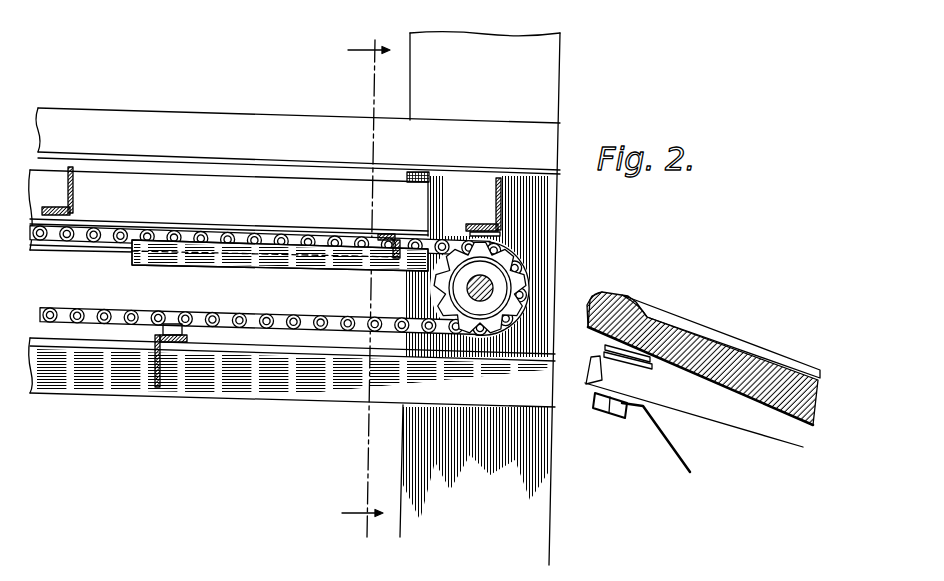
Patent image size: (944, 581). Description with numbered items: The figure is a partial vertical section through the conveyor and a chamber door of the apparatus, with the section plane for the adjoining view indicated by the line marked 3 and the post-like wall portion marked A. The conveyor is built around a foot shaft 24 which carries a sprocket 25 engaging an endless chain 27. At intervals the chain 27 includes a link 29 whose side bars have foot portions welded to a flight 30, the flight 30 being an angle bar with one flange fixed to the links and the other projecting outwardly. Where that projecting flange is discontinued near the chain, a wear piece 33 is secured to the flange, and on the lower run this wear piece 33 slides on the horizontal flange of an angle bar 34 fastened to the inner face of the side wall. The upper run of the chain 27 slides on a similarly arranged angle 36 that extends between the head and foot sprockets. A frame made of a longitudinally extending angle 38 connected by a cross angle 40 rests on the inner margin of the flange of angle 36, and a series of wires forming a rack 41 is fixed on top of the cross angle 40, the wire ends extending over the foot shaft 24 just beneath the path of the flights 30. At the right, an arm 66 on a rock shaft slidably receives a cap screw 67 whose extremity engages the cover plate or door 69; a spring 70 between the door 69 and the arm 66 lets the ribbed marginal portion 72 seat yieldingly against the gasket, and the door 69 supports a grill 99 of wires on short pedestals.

The post A is at (562, 93).
The section line 3- 3 is at (366, 280).
The foot shaft 24 is at (487, 283).
The sprocket 25 is at (455, 318).
The endless chain 27 is at (355, 318).
The link 29 is at (168, 330).
The flight 30 is at (76, 190).
The wear piece 33 is at (180, 350).
The angle bar 34 is at (310, 393).
The angle 36 is at (109, 252).
The longitudinally extending angle 38 is at (292, 263).
The cross angle 40 is at (403, 238).
The rack 41 is at (338, 233).
The arm 66 is at (668, 423).
The cap screw 67 is at (612, 417).
The cover plate or door 69 is at (690, 345).
The spring 70 is at (605, 358).
The ribbed marginal portion 72 is at (607, 293).
The grill 99 is at (662, 308).